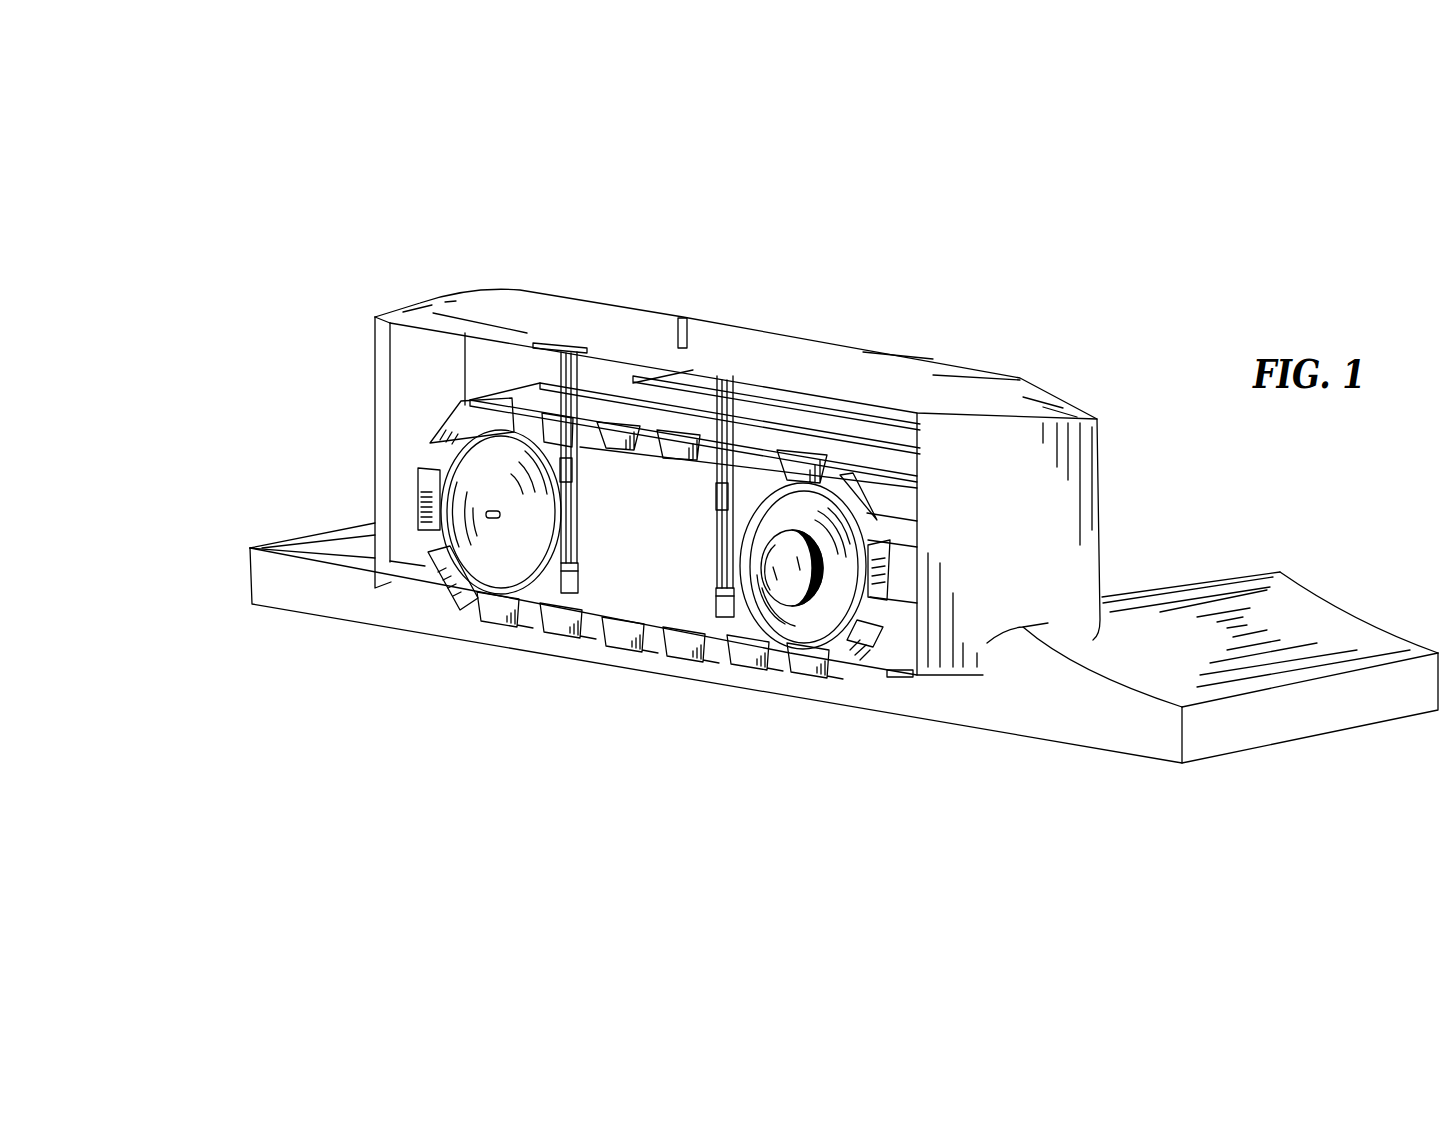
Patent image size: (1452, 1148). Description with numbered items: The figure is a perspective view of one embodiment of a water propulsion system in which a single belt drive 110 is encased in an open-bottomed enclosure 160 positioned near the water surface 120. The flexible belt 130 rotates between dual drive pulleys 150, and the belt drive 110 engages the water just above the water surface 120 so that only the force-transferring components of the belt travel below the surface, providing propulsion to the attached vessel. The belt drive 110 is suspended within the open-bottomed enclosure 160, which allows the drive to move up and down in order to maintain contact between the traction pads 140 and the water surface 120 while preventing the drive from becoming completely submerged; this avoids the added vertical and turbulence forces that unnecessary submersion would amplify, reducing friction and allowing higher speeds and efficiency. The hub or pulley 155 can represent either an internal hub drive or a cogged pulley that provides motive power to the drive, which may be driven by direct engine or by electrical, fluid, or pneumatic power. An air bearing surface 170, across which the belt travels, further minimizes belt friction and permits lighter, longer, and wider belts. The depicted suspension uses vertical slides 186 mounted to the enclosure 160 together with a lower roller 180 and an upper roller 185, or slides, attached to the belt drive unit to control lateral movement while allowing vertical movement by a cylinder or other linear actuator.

The belt drive 110 is at (743, 478).
The water surface 120 is at (258, 546).
The flexible belt 130 is at (618, 635).
The traction pads 140 is at (673, 424).
The dual drive pulleys 150 is at (478, 487).
The hub or pulley 155 is at (797, 537).
The open-bottomed enclosure 160 is at (1053, 397).
The air bearing surface 170 is at (678, 632).
The lower roller 180 is at (567, 588).
The upper roller 185 is at (555, 449).
The vertical slides 186 is at (722, 382).